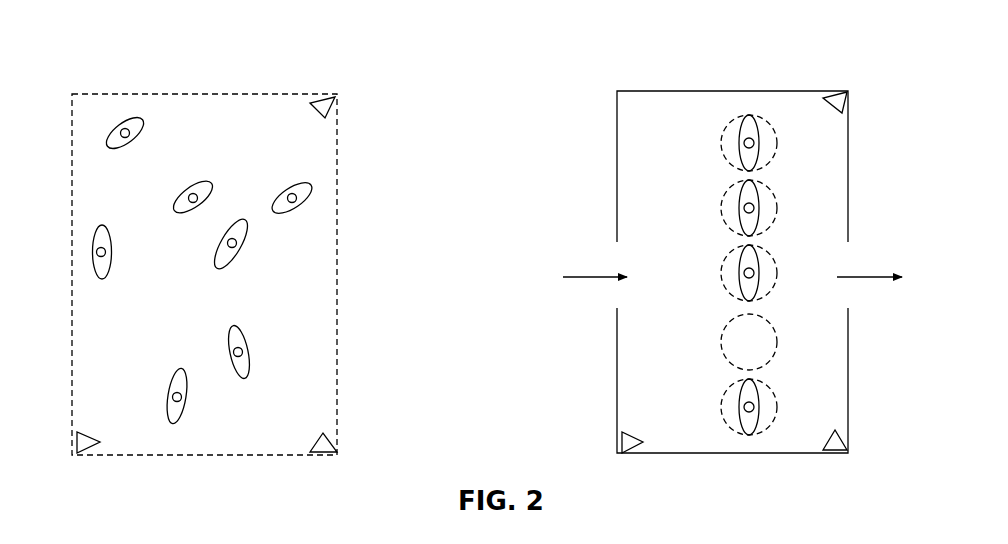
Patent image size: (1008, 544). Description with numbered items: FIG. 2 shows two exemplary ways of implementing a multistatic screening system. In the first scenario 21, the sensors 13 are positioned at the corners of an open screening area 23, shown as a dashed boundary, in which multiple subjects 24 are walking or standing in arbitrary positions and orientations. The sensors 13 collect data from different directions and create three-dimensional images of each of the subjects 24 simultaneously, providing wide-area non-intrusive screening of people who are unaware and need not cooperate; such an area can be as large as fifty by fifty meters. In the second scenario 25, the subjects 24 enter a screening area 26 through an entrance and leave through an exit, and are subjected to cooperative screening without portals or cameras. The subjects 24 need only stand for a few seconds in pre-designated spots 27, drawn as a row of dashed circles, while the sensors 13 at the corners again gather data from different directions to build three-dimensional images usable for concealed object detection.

The sensors 13 is at (322, 107).
The first scenario 21 is at (178, 236).
The open screening area 23 is at (85, 183).
The subjects 24 is at (217, 268).
The second scenario 25 is at (719, 236).
The screening area 26 is at (630, 140).
The pre-designated spots 27 is at (775, 343).